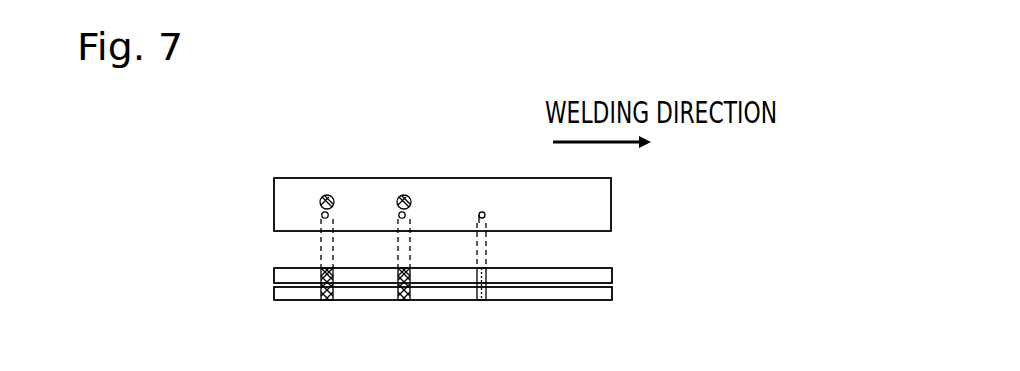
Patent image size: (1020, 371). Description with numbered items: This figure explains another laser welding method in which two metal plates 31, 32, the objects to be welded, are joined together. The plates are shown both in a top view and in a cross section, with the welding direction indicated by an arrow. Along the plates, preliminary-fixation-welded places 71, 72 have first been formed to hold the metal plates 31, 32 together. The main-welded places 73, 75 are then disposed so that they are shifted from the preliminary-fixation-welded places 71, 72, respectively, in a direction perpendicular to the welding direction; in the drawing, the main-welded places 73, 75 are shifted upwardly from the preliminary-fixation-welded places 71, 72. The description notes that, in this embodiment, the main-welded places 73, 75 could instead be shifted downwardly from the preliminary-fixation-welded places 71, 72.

The metal plate 31 is at (612, 187).
The metal plate 32 is at (612, 300).
The preliminary-fixation-welded place 71 is at (329, 214).
The preliminary-fixation-welded place 72 is at (406, 214).
The main-welded place 73 is at (322, 197).
The main-welded place 75 is at (400, 197).